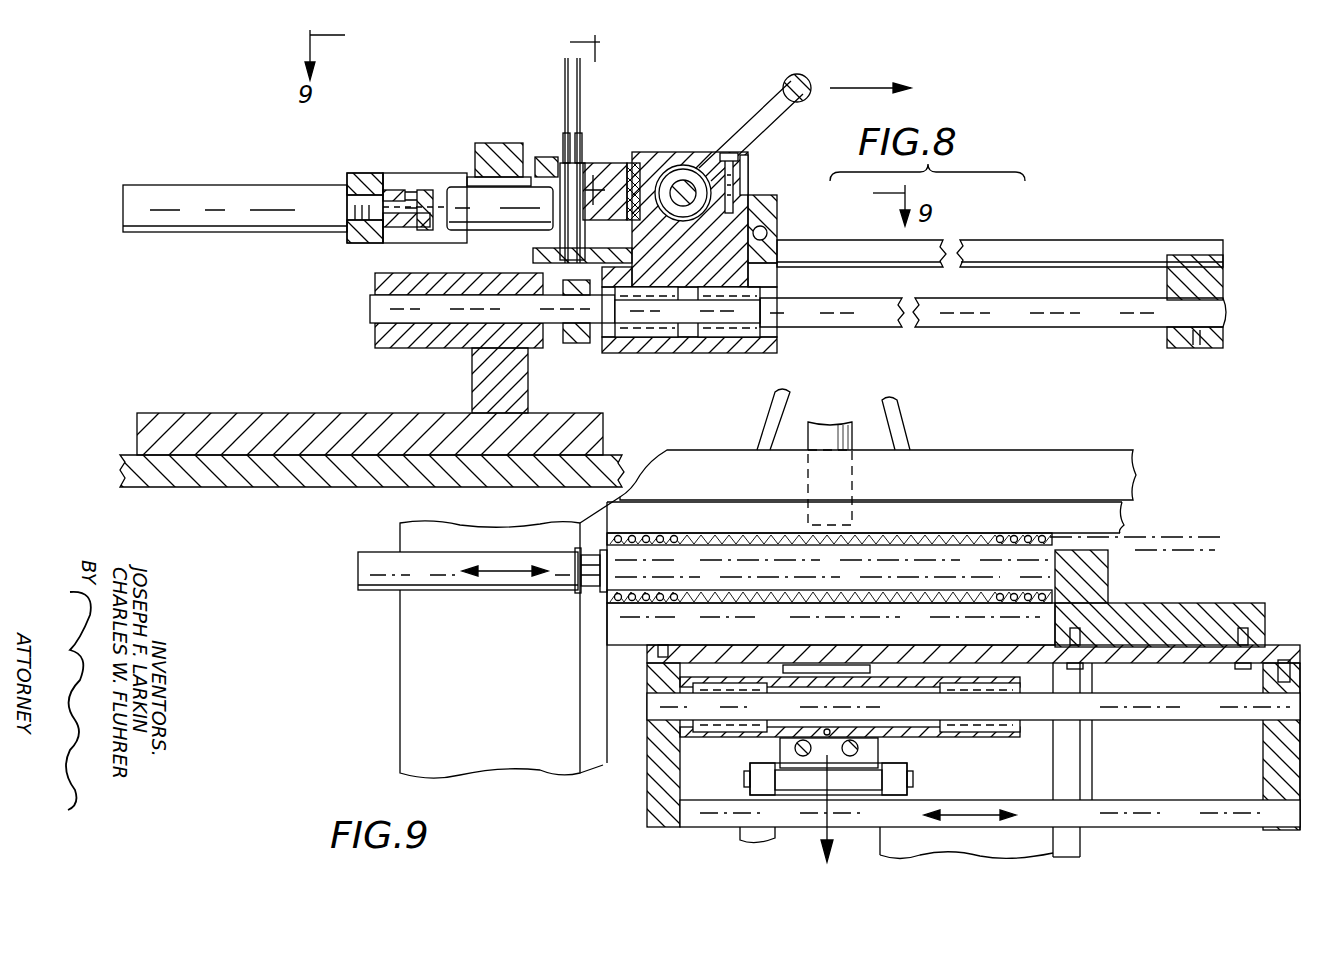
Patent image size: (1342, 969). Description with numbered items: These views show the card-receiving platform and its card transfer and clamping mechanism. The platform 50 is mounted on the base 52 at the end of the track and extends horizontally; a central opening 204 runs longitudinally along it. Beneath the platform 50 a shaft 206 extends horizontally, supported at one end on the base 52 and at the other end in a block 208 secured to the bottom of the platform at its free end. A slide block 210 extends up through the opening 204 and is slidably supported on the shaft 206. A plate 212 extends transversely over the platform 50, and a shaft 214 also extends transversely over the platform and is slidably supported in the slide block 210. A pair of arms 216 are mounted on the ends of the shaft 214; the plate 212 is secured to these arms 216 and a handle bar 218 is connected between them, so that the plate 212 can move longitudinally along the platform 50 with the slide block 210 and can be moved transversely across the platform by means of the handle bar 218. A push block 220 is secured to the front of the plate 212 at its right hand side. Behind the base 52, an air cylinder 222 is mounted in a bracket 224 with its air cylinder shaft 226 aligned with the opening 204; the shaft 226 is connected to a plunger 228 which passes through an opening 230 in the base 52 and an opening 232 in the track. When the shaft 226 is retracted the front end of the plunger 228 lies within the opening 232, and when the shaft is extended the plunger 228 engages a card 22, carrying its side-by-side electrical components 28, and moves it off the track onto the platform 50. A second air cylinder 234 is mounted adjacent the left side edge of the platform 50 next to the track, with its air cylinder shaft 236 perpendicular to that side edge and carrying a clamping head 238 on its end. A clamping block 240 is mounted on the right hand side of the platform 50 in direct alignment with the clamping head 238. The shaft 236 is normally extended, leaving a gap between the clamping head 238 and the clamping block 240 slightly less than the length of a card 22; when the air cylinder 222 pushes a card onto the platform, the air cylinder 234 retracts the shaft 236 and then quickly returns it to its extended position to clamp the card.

In FIG. 8, the card 22 is at (606, 168).
In FIG. 9, the card 22 is at (982, 530).
In FIG. 8, the electrical components 28 is at (579, 158).
In FIG. 9, the electrical components 28 is at (1030, 592).
In FIG. 8, the platform 50 is at (1190, 245).
In FIG. 9, the platform 50 is at (1068, 843).
In FIG. 8, the base 52 is at (400, 332).
In FIG. 9, the central opening 204 is at (785, 833).
In FIG. 8, the shaft 206 is at (1087, 318).
In FIG. 8, the block 208 is at (1215, 282).
In FIG. 8, the slide block 210 is at (750, 200).
In FIG. 9, the slide block 210 is at (865, 757).
In FIG. 9, the plate 212 is at (1133, 660).
In FIG. 9, the shaft 214 is at (1305, 690).
In FIG. 9, the arms 216 is at (662, 758).
In FIG. 9, the handle bar 218 is at (1228, 820).
In FIG. 9, the push block 220 is at (1212, 608).
In FIG. 8, the air cylinder 222 is at (230, 186).
In FIG. 8, the bracket 224 is at (370, 182).
In FIG. 9, the bracket 224 is at (898, 412).
In FIG. 8, the air cylinder shaft 226 is at (410, 222).
In FIG. 8, the plunger 228 is at (508, 208).
In FIG. 9, the plunger 228 is at (832, 432).
In FIG. 8, the opening 230 is at (480, 172).
In FIG. 8, the opening 232 is at (546, 156).
In FIG. 9, the air cylinder 234 is at (462, 548).
In FIG. 9, the air cylinder shaft 236 is at (586, 560).
In FIG. 9, the clamping head 238 is at (600, 593).
In FIG. 9, the clamping block 240 is at (1092, 745).